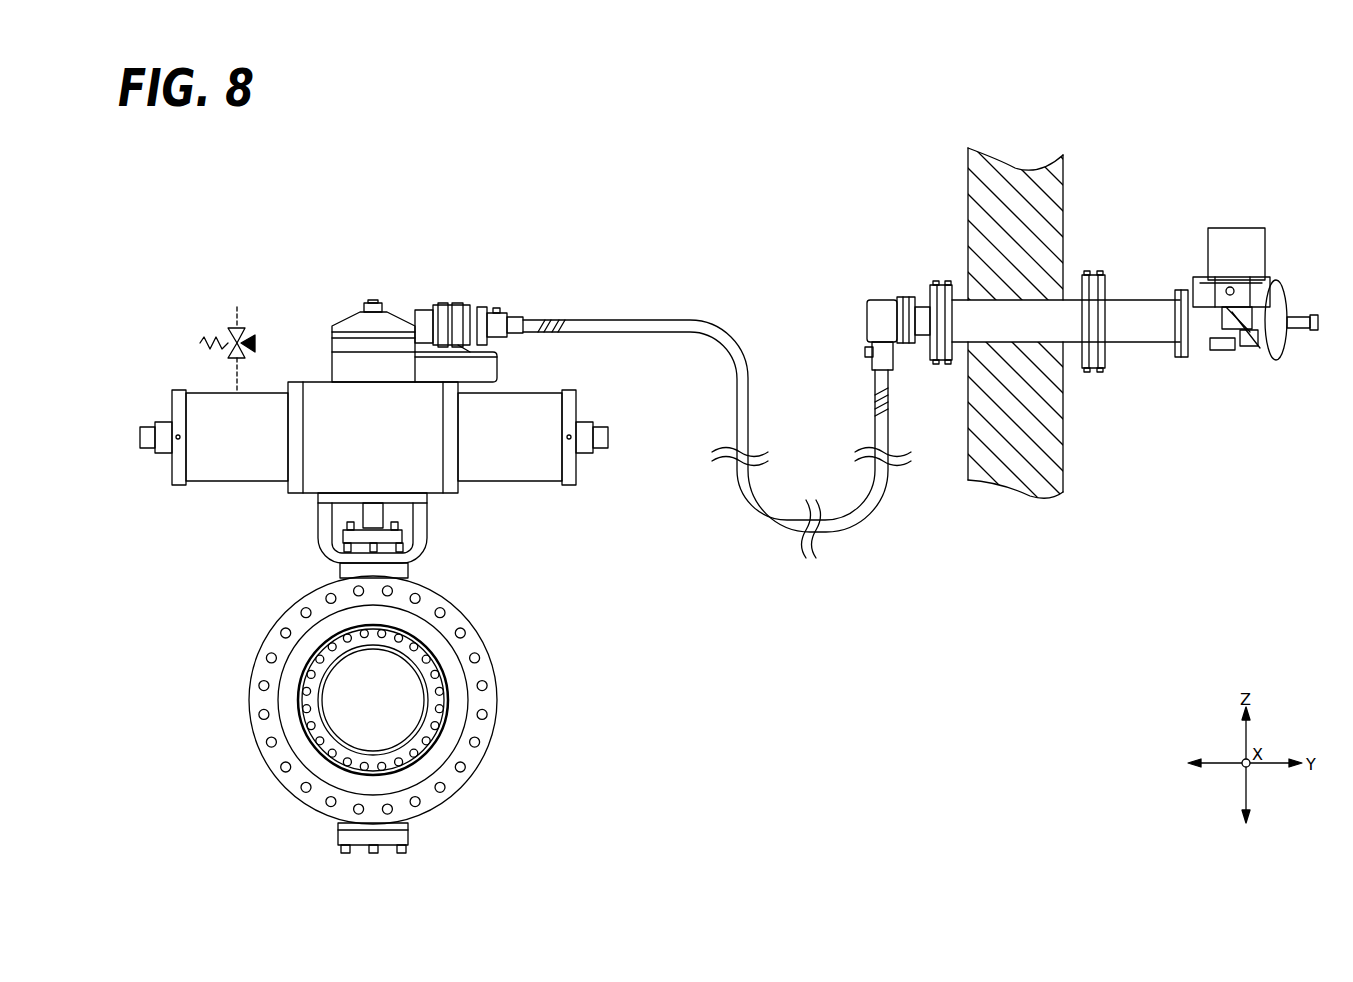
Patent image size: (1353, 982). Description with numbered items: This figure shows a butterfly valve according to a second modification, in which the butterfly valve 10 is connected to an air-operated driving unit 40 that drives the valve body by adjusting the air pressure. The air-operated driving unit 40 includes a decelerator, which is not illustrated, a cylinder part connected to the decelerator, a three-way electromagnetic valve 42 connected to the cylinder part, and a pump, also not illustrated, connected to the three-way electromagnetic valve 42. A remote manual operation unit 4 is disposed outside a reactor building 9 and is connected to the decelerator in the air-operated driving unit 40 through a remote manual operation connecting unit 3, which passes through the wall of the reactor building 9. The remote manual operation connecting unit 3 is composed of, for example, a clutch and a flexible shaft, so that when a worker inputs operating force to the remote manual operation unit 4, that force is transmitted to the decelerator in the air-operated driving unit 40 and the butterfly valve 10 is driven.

The remote manual operation connecting unit 3 is at (688, 318).
The remote manual operation unit 4 is at (1263, 300).
The reactor building 9 is at (1063, 208).
The butterfly valve 10 is at (477, 777).
The air-operated driving unit 40 is at (522, 480).
The three-way electromagnetic valve 42 is at (245, 338).